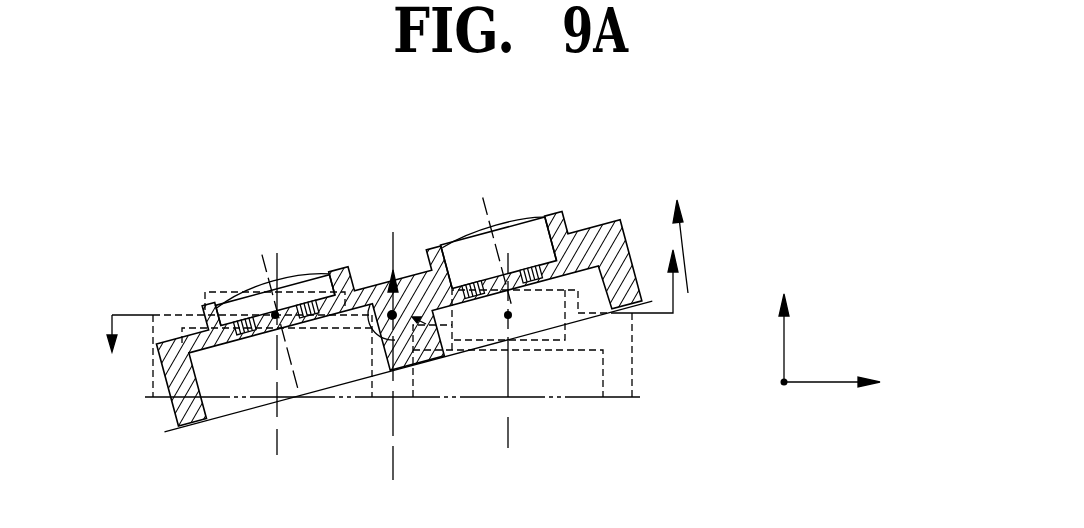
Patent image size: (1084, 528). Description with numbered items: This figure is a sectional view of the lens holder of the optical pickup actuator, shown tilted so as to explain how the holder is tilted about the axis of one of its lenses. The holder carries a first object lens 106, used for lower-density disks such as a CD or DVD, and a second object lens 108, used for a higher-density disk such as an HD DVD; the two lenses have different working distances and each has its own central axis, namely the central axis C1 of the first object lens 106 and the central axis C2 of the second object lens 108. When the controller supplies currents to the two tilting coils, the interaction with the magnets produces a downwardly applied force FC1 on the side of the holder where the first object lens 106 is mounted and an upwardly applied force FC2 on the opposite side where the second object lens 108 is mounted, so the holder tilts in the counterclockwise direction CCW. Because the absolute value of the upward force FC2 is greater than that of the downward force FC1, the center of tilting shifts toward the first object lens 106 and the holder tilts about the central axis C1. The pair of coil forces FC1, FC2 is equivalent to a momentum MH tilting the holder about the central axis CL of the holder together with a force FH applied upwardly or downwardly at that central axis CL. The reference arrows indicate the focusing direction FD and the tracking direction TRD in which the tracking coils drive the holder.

The first object lens 106 is at (304, 282).
The second object lens 108 is at (523, 237).
The central axis of the lens holder CL is at (402, 297).
The force applied at the central axis FH is at (378, 283).
The momentum MH is at (433, 331).
The central axis of the first object lens C1 is at (299, 354).
The central axis of the second object lens C2 is at (487, 350).
The downwardly applied force FC1 is at (110, 333).
The upwardly applied force FC2 is at (654, 299).
The counterclockwise direction CCW is at (709, 246).
The focusing direction FD is at (784, 324).
The tracking direction TRD is at (859, 383).